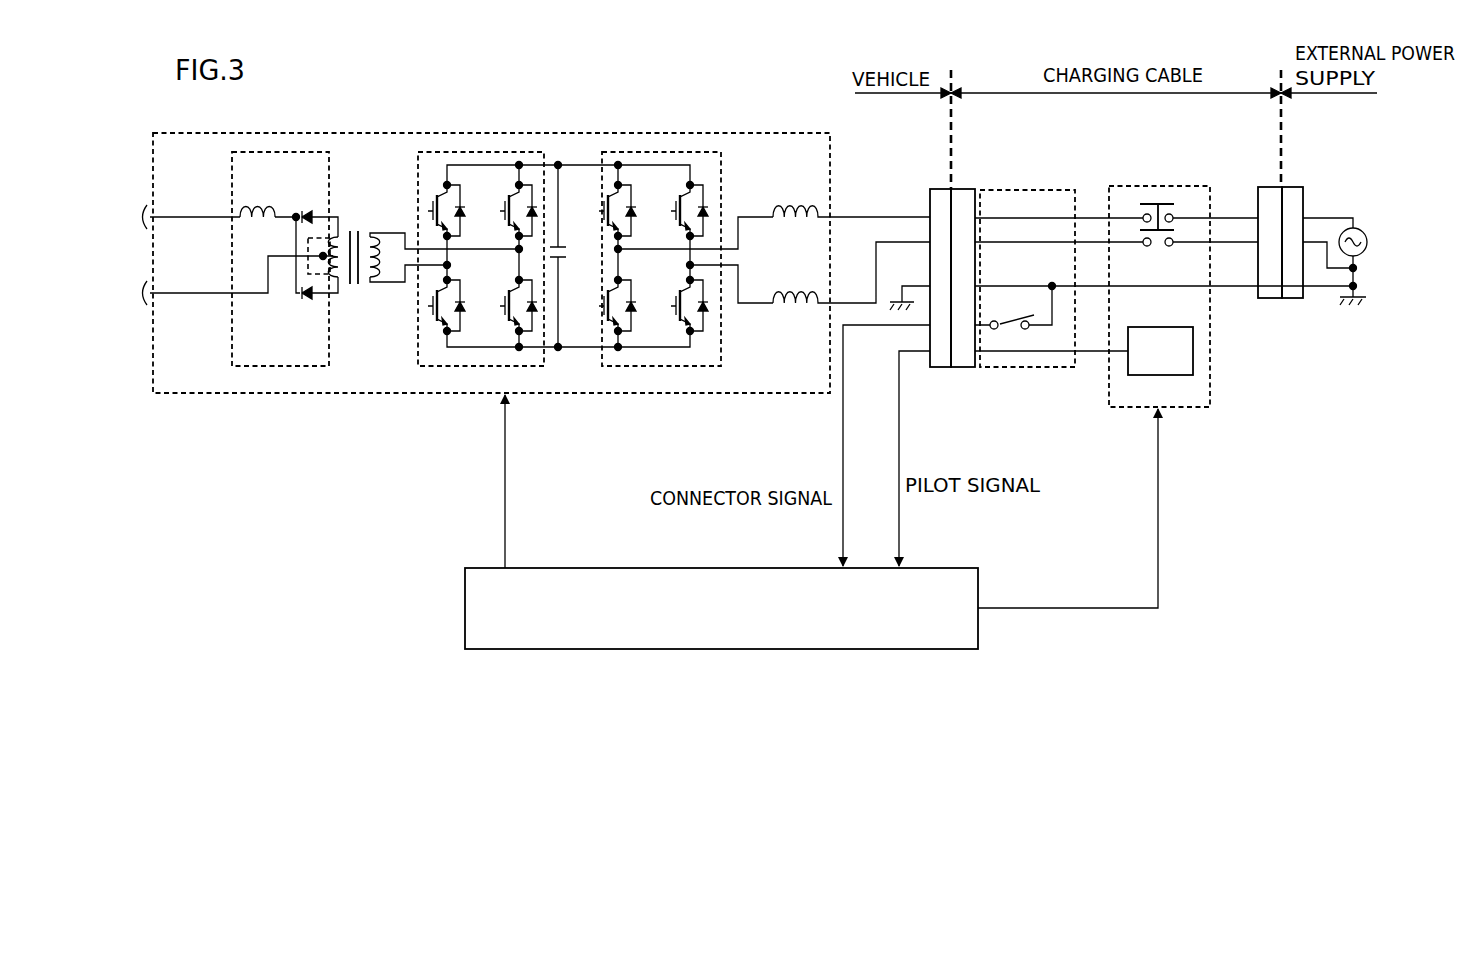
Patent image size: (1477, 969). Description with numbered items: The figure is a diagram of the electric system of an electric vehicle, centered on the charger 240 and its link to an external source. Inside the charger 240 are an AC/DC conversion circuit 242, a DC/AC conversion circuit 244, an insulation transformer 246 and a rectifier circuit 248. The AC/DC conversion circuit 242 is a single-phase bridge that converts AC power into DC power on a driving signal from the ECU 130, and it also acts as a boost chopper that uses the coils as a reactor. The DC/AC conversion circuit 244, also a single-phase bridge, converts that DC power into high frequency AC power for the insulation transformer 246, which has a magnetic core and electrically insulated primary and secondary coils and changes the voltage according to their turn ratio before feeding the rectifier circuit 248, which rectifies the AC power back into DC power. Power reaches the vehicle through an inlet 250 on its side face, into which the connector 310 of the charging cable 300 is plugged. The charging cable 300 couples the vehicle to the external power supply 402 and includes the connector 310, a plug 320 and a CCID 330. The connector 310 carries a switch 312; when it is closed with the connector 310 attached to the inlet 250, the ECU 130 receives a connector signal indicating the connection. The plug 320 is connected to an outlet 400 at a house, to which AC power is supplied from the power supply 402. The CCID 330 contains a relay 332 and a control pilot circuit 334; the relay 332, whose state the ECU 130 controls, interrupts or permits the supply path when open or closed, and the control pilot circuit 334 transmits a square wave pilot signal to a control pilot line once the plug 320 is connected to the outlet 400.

The ECU 130 is at (865, 650).
The charger 240 is at (422, 393).
The AC/DC conversion circuit 242 is at (655, 366).
The DC/AC conversion circuit 244 is at (545, 366).
The insulation transformer 246 is at (367, 303).
The rectifier circuit 248 is at (284, 366).
The inlet 250 is at (940, 189).
The charging cable 300 is at (1074, 181).
The connector 310 is at (962, 189).
The switch 312 is at (1008, 344).
The plug 320 is at (1272, 187).
The CCID 330 is at (1183, 296).
The relay 332 is at (1129, 206).
The control pilot circuit 334 is at (1193, 351).
The outlet 400 is at (1333, 280).
The external power supply 402 is at (1355, 228).